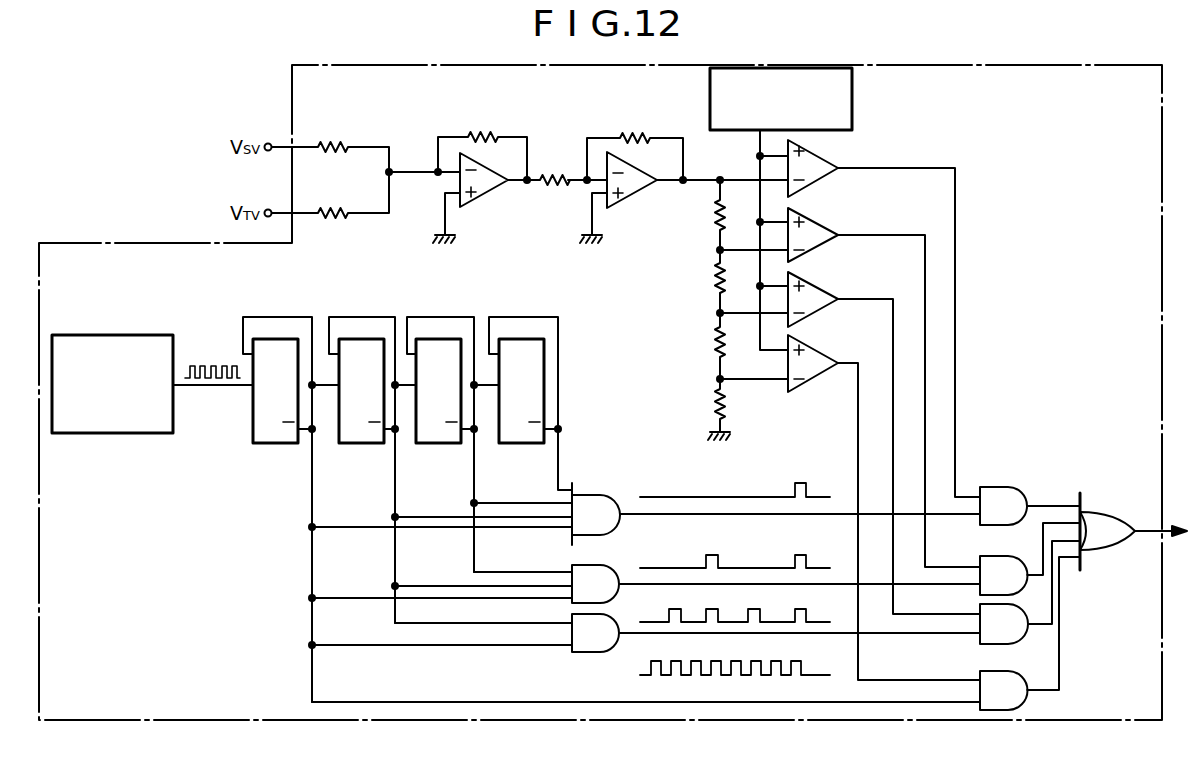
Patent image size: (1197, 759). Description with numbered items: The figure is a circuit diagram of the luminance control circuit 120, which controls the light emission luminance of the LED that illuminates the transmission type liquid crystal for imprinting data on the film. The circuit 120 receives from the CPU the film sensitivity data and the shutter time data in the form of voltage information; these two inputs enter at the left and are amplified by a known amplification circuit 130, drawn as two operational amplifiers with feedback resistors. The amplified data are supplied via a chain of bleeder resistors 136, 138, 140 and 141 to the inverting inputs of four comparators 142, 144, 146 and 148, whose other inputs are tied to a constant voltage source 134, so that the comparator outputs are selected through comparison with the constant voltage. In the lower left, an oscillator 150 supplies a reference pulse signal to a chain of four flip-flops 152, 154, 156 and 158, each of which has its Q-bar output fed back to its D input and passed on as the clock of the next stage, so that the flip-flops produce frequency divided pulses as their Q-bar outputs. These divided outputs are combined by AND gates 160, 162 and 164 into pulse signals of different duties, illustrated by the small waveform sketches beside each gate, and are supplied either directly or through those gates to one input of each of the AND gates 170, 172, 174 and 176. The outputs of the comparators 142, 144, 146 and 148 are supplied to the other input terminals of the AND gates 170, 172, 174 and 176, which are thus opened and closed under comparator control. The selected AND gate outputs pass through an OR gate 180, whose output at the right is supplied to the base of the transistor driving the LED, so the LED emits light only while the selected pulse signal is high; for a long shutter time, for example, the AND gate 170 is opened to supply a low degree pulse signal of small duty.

The luminance control circuit 120 is at (866, 62).
The amplification circuit 130 is at (703, 118).
The constant voltage source 134 is at (852, 93).
The bleeder resistor 136 is at (712, 212).
The bleeder resistor 138 is at (712, 278).
The bleeder resistor 140 is at (712, 340).
The bleeder resistor 141 is at (710, 402).
The comparator 142 is at (830, 148).
The comparator 144 is at (828, 220).
The comparator 146 is at (828, 288).
The comparator 148 is at (828, 352).
The oscillator 150 is at (166, 335).
The flip-flop 152 is at (287, 339).
The flip-flop 154 is at (372, 339).
The flip-flop 156 is at (450, 339).
The flip-flop 158 is at (531, 339).
The AND gate 160 is at (603, 494).
The AND gate 162 is at (603, 564).
The AND gate 164 is at (600, 653).
The AND gate 170 is at (1016, 487).
The AND gate 172 is at (980, 556).
The AND gate 174 is at (980, 606).
The AND gate 176 is at (980, 670).
The OR gate 180 is at (1106, 512).